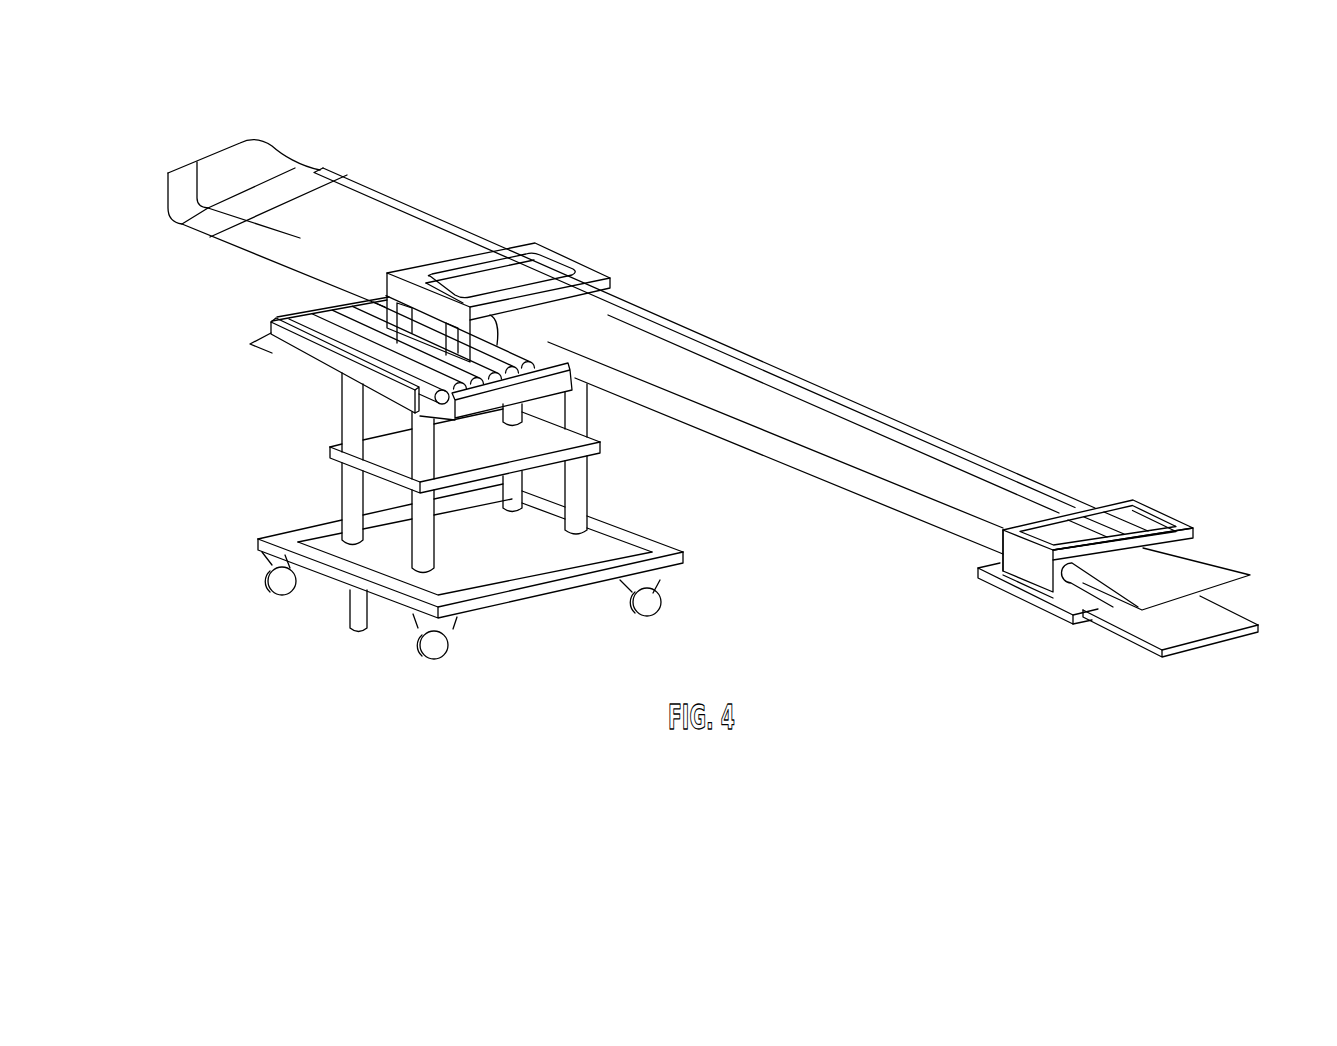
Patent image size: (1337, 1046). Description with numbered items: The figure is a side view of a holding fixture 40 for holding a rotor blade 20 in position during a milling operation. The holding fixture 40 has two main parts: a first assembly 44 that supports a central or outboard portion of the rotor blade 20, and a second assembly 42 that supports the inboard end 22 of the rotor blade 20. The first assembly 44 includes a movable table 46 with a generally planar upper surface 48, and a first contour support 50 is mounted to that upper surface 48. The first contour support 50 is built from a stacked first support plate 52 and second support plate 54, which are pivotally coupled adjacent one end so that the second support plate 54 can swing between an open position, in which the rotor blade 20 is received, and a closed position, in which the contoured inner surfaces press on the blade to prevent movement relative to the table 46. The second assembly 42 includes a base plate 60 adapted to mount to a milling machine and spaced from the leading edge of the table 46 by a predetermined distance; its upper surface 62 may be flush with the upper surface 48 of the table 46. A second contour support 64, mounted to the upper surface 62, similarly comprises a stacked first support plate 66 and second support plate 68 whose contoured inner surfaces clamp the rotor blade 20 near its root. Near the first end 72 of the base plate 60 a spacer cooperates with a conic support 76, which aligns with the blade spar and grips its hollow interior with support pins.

The rotor blade 20 is at (742, 388).
The inboard end 22 is at (1187, 567).
The holding fixture 40 is at (944, 240).
The second assembly 42 is at (1117, 712).
The first assembly 44 is at (351, 675).
The movable table 46 is at (345, 428).
The upper surface 48 is at (330, 323).
The first contour support 50 is at (540, 220).
The first support plate 52 is at (487, 340).
The second support plate 54 is at (567, 253).
The base plate 60 is at (1027, 593).
The upper surface 62 is at (1010, 577).
The second contour support 64 is at (1150, 506).
The first support plate 66 is at (1000, 540).
The second support plate 68 is at (1018, 547).
The first end 72 is at (1172, 647).
The conic support 76 is at (1200, 605).